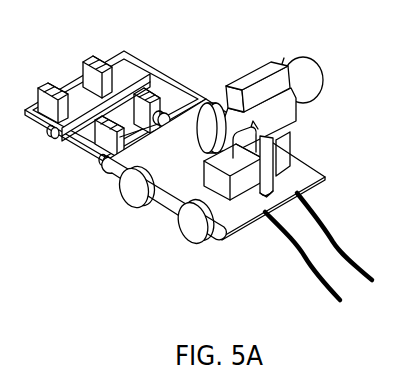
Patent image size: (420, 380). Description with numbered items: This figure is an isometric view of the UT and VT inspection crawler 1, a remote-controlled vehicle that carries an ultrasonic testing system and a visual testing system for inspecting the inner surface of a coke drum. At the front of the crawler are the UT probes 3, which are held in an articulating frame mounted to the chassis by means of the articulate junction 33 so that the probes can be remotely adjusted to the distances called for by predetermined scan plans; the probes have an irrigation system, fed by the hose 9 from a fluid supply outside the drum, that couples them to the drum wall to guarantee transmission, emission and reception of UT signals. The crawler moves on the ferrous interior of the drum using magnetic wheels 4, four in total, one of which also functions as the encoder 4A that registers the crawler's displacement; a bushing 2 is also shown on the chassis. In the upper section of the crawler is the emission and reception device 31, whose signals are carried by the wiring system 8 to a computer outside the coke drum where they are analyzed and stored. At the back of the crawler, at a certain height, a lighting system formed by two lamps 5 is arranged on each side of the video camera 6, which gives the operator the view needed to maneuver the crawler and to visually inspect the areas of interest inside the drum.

The UT and VT inspection crawler 1 is at (311, 172).
The bushing 2 is at (171, 120).
The UT probes 3 is at (88, 68).
The magnetic wheels 4 is at (132, 206).
The encoder 4A is at (192, 243).
The lamps 5 is at (312, 92).
The video camera 6 is at (248, 67).
The wiring system 8 is at (338, 242).
The hose 9 is at (298, 258).
The emission and reception device 31 is at (205, 172).
The articulate junction 33 is at (52, 135).